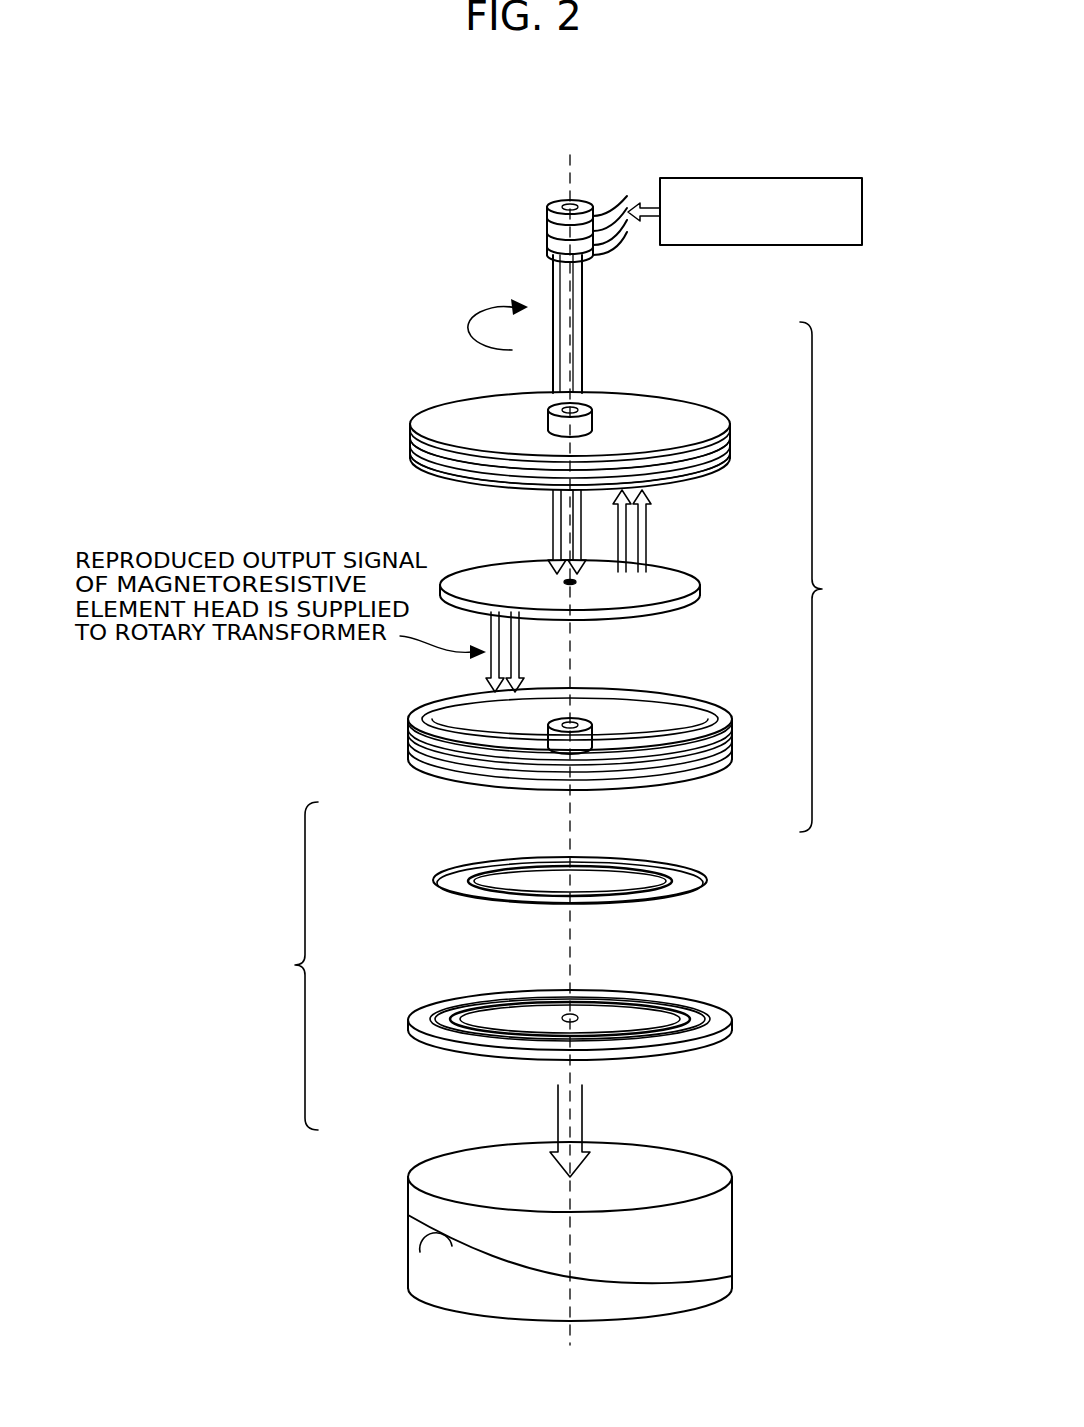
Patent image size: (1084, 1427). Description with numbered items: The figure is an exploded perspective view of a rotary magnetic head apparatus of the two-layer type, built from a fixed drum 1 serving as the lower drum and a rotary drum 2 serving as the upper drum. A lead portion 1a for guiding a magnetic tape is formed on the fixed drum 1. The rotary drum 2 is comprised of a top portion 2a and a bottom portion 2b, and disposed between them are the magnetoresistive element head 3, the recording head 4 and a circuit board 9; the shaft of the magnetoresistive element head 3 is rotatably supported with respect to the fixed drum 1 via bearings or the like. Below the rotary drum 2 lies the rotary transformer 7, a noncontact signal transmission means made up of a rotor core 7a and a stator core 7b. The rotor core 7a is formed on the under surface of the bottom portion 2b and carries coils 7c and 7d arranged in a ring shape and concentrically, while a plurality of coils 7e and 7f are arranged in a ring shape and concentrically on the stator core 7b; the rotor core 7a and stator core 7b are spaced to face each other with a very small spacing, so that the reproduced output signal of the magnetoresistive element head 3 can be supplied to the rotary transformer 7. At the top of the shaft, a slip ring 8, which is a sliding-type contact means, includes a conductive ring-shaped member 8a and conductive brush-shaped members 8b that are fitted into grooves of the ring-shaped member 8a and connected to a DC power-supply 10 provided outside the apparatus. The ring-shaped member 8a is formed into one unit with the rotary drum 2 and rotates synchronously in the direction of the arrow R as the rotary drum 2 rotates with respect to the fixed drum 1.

The fixed drum 1 is at (553, 1231).
The lead portion 1a is at (422, 1250).
The rotary drum 2 is at (822, 577).
The top portion of the rotary drum 2a is at (617, 392).
The bottom portion of the rotary drum 2b is at (655, 790).
The magnetoresistive element head 3 is at (686, 486).
The recording head 4 is at (438, 483).
The rotary transformer 7 is at (294, 966).
The rotor core 7a is at (516, 871).
The stator core 7b is at (529, 1059).
The coil 7c is at (502, 900).
The coil 7d is at (620, 895).
The coil 7e is at (465, 1037).
The coil 7f is at (527, 1033).
The slip ring 8 is at (540, 256).
The conductive ring-shaped member 8a is at (562, 200).
The conductive brush-shaped member 8b is at (630, 235).
The circuit board 9 is at (665, 603).
The DC power-supply 10 is at (862, 216).
The arrow R is at (470, 326).